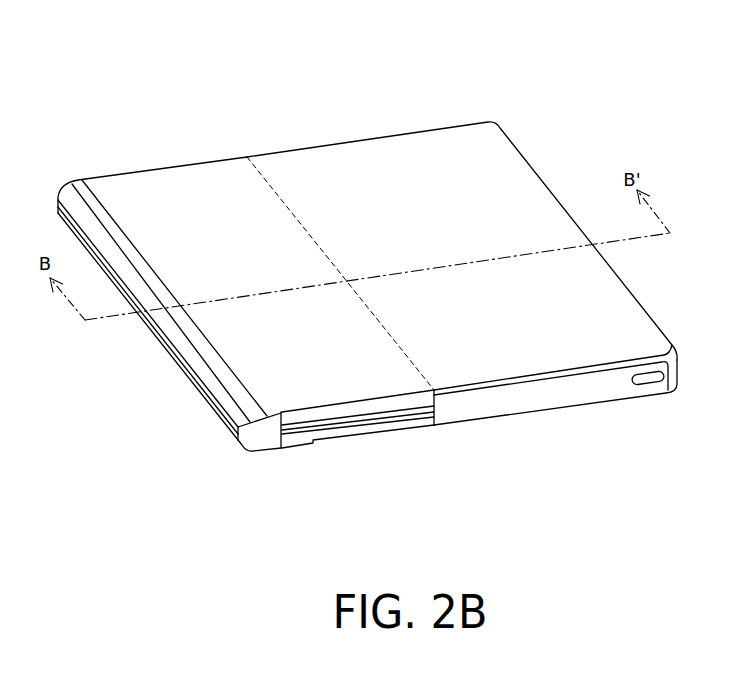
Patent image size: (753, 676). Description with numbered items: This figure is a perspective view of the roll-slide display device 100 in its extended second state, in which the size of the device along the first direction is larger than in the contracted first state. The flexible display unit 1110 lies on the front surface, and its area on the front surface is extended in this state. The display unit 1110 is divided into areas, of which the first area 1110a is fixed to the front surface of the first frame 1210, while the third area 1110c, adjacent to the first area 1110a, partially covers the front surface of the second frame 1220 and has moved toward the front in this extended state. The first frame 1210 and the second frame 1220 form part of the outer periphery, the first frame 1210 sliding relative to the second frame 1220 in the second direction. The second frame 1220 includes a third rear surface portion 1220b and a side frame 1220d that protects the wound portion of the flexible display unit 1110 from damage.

The roll-slide display device 100 is at (590, 50).
The display unit 1110 is at (265, 72).
The first area 1110a is at (295, 172).
The third area 1110c is at (205, 185).
The first frame 1210 is at (567, 395).
The second frame 1220 is at (122, 437).
The third rear surface portion 1220b is at (295, 440).
The side frame 1220d is at (233, 408).